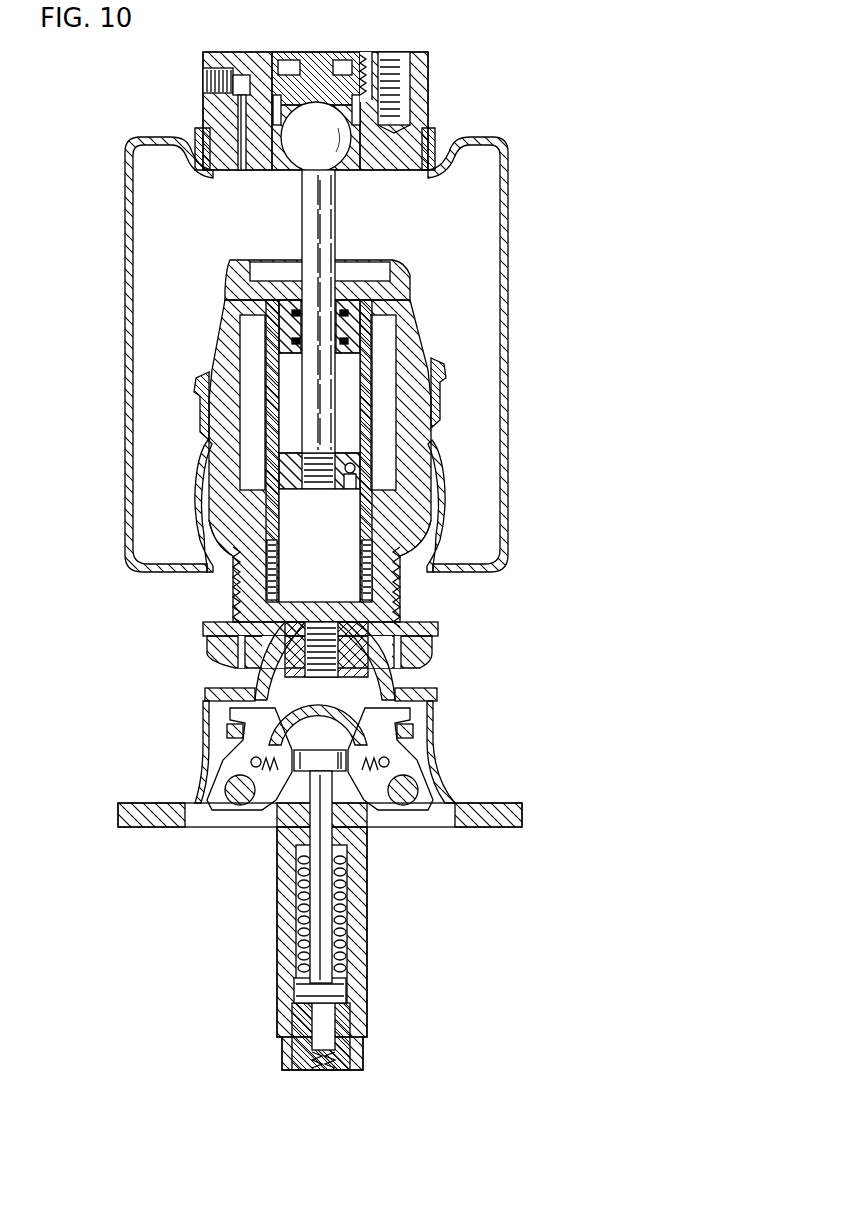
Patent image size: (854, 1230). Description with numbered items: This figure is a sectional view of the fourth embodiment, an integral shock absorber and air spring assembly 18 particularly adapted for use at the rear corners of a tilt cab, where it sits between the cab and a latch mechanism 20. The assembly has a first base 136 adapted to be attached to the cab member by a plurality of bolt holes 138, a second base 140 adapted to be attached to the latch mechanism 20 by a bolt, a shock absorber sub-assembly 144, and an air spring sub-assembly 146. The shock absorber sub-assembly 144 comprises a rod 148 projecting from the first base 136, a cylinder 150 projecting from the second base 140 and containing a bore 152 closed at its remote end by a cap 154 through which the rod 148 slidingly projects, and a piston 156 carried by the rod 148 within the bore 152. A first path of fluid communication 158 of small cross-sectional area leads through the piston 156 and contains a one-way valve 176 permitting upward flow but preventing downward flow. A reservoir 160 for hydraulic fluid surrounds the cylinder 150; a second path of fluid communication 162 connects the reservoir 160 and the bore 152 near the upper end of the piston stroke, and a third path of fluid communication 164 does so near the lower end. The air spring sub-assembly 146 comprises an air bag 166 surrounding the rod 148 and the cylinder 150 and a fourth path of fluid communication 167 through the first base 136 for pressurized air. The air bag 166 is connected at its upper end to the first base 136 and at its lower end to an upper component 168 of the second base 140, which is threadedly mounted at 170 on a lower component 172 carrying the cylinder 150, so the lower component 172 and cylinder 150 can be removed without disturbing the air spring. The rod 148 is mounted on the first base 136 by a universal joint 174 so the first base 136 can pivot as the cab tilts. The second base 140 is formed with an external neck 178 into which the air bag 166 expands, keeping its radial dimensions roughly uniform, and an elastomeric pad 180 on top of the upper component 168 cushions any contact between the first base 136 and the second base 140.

The integral shock absorber and air spring assembly 18 is at (513, 165).
The latch mechanism 20 is at (188, 766).
The first base 136 is at (428, 100).
The bolt holes 138 is at (407, 62).
The second base 140 is at (432, 656).
The shock absorber sub-assembly 144 is at (428, 333).
The air spring sub-assembly 146 is at (520, 276).
The rod 148 is at (337, 221).
The cylinder 150 is at (372, 378).
The bore 152 is at (372, 452).
The cap 154 is at (392, 301).
The piston 156 is at (292, 491).
The first path of fluid communication 158 is at (348, 490).
The reservoir 160 is at (272, 385).
The second path of fluid communication 162 is at (272, 353).
The third path of fluid communication 164 is at (283, 560).
The air bag 166 is at (509, 372).
The fourth path of fluid communication 167 is at (204, 110).
The upper component 168 is at (423, 508).
The threaded mounting 170 is at (433, 627).
The lower component 172 is at (350, 596).
The universal joint 174 is at (293, 178).
The one-way valve 176 is at (350, 462).
The external neck 178 is at (413, 586).
The elastomeric pad 180 is at (403, 269).